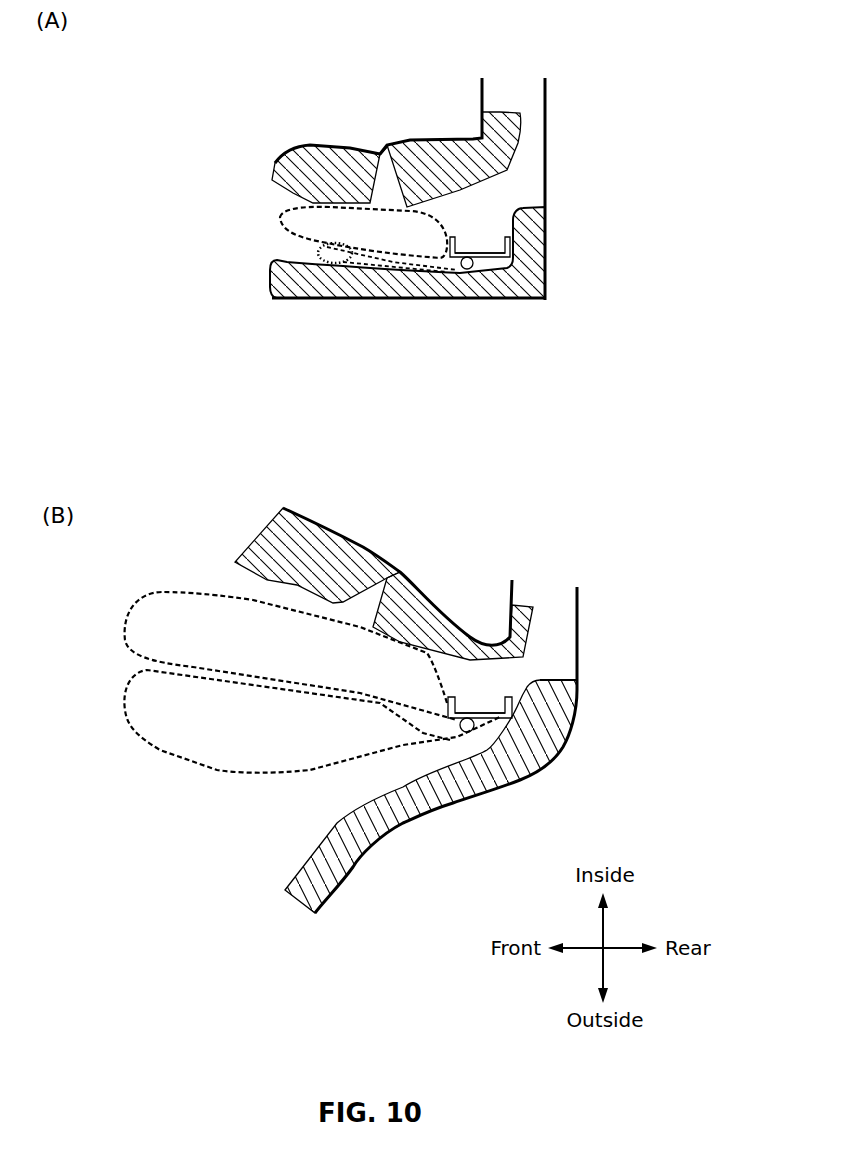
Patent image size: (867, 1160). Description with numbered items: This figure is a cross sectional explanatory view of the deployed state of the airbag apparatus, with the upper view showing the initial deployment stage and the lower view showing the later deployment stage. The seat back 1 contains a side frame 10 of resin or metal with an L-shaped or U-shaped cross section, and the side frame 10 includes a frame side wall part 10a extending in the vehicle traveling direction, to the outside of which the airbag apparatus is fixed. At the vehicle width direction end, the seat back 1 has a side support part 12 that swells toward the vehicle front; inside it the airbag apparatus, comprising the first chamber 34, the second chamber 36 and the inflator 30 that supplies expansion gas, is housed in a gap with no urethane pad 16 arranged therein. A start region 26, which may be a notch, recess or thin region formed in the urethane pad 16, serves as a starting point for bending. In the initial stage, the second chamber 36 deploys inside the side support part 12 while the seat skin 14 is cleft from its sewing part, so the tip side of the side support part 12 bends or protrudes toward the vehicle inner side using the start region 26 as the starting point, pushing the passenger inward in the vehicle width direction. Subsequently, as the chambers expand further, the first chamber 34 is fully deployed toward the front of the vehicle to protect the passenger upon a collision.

The seat back 1 is at (547, 95).
The side frame 10 is at (510, 240).
The frame side wall part 10a is at (495, 260).
The side support part 12 is at (222, 135).
The skin 14 is at (337, 533).
The urethane pad 16 is at (325, 143).
The start region 26 is at (381, 140).
The inflator 30 is at (465, 272).
The first chamber 34 is at (320, 253).
The second chamber 36 is at (437, 220).